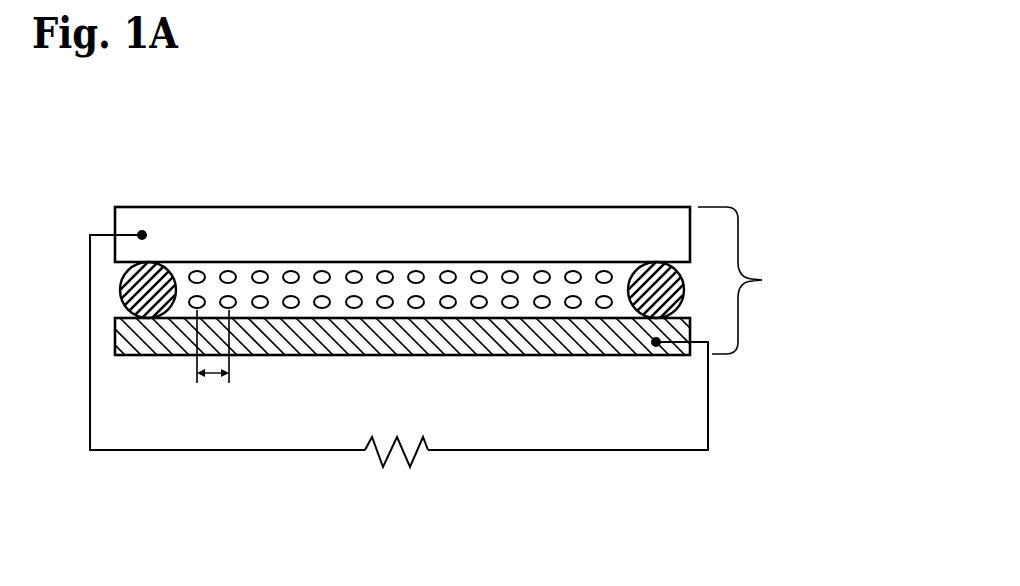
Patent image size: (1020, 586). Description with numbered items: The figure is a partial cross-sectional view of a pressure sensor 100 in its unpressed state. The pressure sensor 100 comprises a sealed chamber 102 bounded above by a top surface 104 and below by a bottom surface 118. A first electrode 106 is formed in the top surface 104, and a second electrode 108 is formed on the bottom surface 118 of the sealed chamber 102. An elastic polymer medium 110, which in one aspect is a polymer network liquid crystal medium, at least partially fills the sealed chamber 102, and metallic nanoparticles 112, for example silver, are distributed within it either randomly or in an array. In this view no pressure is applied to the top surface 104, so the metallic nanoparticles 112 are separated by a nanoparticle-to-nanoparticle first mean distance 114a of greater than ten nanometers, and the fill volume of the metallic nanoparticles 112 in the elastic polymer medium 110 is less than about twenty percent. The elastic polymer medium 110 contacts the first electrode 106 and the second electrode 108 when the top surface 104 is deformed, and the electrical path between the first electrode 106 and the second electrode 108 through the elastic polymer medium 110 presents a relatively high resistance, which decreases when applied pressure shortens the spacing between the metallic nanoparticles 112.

The pressure sensor 100 is at (714, 139).
The sealed chamber 102 is at (795, 281).
The top surface 104 is at (402, 148).
The first electrode 106 is at (355, 236).
The second electrode 108 is at (155, 348).
The elastic polymer medium 110 is at (423, 203).
The metallic nanoparticles 112 is at (258, 184).
The first mean distance 114a is at (214, 376).
The bottom surface 118 is at (512, 359).